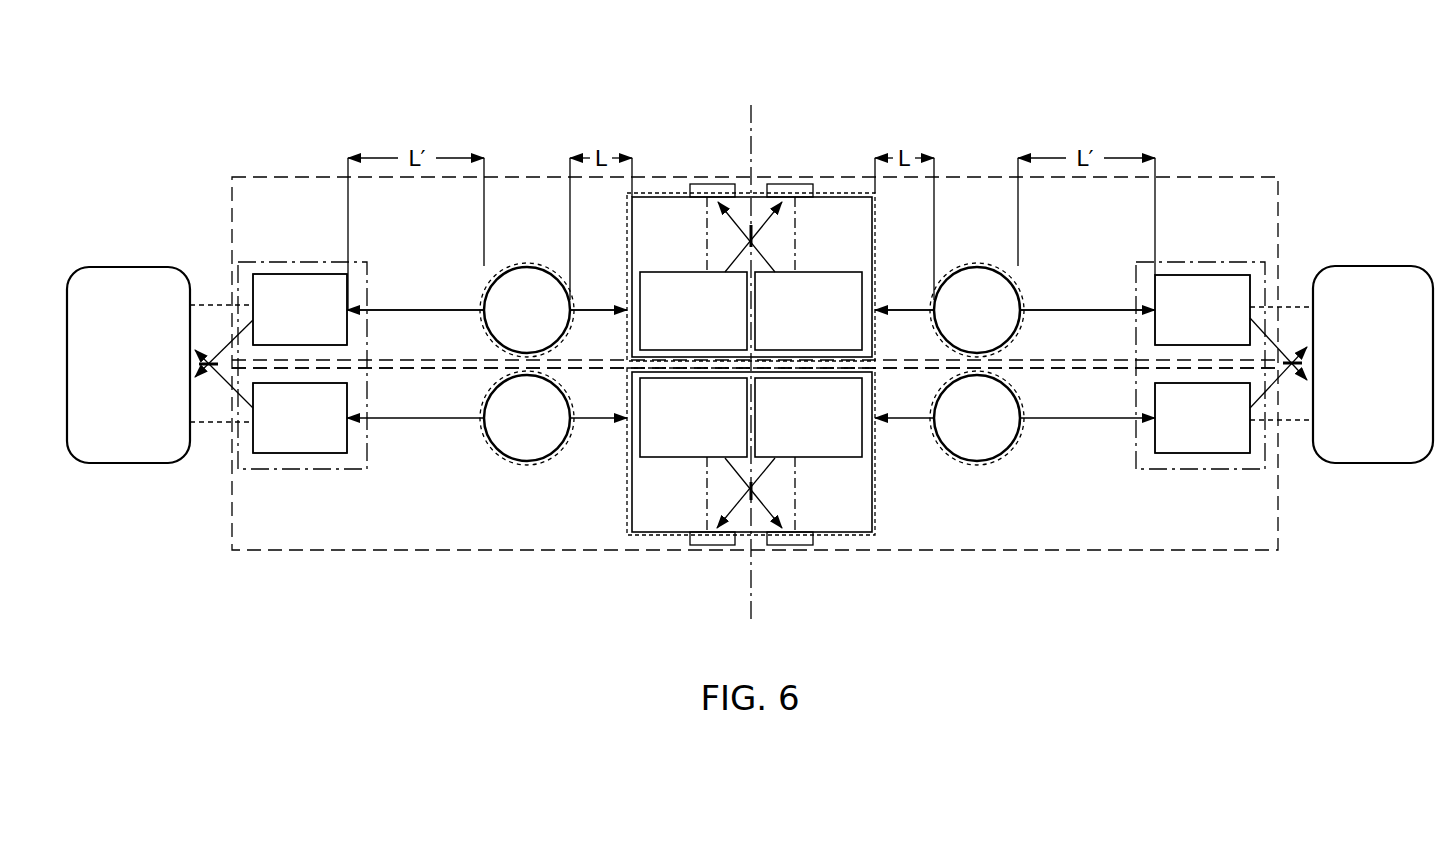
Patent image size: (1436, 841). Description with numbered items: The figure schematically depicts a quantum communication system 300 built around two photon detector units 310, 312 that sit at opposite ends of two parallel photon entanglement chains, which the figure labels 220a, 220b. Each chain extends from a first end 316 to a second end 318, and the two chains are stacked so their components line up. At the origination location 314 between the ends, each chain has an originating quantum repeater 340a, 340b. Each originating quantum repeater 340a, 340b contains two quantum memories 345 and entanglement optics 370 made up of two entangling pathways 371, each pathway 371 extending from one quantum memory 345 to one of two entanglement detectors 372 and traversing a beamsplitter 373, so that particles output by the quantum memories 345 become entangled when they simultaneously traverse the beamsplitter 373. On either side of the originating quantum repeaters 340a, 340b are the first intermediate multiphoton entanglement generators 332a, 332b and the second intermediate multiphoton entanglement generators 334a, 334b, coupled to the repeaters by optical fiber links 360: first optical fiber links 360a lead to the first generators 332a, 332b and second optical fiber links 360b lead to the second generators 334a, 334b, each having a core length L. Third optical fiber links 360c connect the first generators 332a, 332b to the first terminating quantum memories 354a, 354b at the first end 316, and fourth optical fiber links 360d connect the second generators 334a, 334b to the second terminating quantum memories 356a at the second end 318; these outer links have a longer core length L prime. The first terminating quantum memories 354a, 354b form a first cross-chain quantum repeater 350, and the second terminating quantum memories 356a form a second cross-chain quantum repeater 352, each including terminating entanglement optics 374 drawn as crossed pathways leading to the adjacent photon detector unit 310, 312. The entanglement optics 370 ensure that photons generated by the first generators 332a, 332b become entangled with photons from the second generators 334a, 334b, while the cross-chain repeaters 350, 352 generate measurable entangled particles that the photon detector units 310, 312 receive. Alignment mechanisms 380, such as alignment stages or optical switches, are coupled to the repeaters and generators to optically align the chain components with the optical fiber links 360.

The quantum communication system 300 is at (1170, 117).
The photon detector unit 310 is at (120, 267).
The photon detector unit 312 is at (1385, 266).
The origination location 314 is at (751, 115).
The first end 316 is at (143, 176).
The second end 318 is at (1360, 178).
The first half 220a is at (232, 228).
The second half 220b is at (232, 502).
The first intermediate multiphoton entanglement generator 332a is at (532, 263).
The first intermediate multiphoton entanglement generator 332b is at (532, 465).
The second intermediate multiphoton entanglement generator 334a is at (972, 263).
The second intermediate multiphoton entanglement generator 334b is at (972, 465).
The originating quantum repeater 340a is at (832, 193).
The originating quantum repeater 340b is at (832, 535).
The quantum memory 345 is at (751, 364).
The first cross-chain quantum repeater 350 is at (367, 469).
The second cross-chain quantum repeater 352 is at (1136, 469).
The first terminating quantum memory 354a is at (323, 274).
The first terminating quantum memory 354b is at (323, 453).
The second terminating quantum memory 356a is at (1180, 275).
The optical fiber link 360 is at (390, 306).
The first optical fiber link 360a is at (585, 311).
The second optical fiber link 360b is at (920, 310).
The third optical fiber link 360c is at (453, 310).
The fourth optical fiber link 360d is at (1060, 310).
The entanglement optics 370 is at (798, 233).
The entangling pathway 371 is at (246, 330).
The entanglement detector 372 is at (705, 184).
The beamsplitter 373 is at (205, 364).
The terminating entanglement optics 374 is at (215, 425).
The alignment mechanism 380 is at (482, 318).